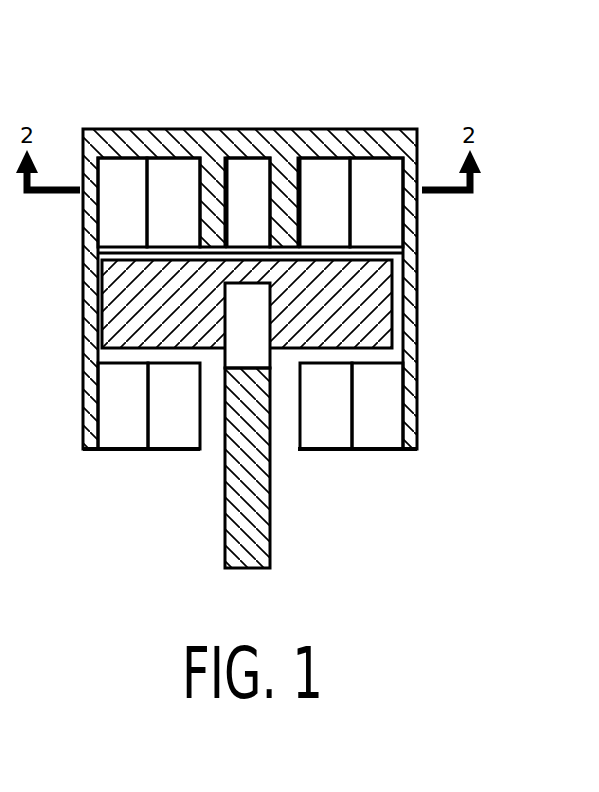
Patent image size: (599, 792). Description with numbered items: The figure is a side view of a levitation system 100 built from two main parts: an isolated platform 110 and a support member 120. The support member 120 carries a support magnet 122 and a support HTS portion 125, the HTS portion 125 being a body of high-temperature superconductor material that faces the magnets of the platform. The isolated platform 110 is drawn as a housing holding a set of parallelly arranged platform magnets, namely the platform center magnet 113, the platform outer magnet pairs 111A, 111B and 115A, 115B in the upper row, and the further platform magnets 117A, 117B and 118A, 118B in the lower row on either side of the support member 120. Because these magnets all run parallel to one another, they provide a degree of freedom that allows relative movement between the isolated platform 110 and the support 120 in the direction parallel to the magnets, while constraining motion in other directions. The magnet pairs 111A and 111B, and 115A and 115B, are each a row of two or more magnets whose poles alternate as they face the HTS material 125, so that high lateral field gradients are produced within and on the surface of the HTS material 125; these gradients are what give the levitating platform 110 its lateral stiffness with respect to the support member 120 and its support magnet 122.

The levitation system 100 is at (445, 101).
The isolated platform 110 is at (207, 142).
The platform outer magnet 111A is at (122, 178).
The platform outer magnet 111B is at (175, 180).
The platform center magnet 113 is at (252, 180).
The platform outer magnet 115A is at (322, 180).
The platform outer magnet 115B is at (381, 180).
The platform magnet 117A is at (123, 408).
The platform magnet 117B is at (165, 408).
The platform magnet 118A is at (323, 410).
The platform magnet 118B is at (373, 410).
The support member 120 is at (243, 553).
The support magnet 122 is at (250, 322).
The support HTS portion 125 is at (370, 285).